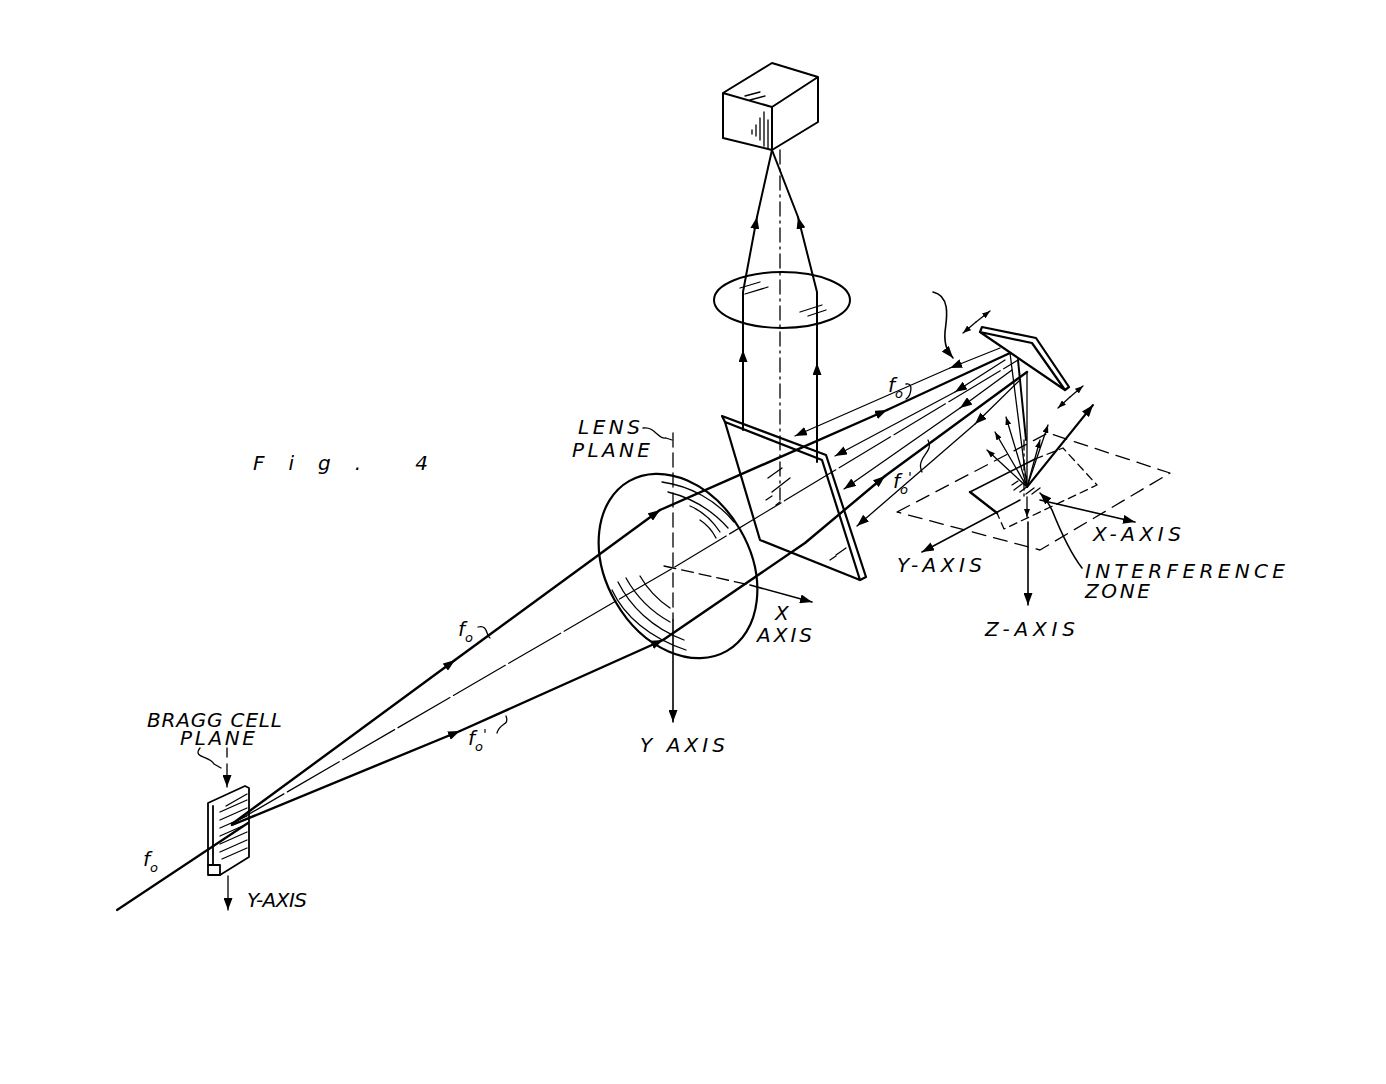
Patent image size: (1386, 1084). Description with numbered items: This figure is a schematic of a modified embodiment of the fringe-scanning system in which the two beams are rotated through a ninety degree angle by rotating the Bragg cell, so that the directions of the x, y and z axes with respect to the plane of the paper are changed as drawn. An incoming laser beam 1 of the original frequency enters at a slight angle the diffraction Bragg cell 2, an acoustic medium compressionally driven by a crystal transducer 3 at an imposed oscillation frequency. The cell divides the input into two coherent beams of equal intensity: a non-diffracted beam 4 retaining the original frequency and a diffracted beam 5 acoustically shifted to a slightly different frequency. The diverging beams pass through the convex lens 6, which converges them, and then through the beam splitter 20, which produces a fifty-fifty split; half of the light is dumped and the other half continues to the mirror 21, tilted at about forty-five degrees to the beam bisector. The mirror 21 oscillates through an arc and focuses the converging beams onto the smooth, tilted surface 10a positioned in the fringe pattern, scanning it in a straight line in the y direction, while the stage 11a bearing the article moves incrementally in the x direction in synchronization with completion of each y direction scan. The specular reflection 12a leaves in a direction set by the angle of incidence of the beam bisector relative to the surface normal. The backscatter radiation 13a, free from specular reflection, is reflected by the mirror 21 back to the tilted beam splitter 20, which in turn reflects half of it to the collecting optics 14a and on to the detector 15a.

The laser beam 1 is at (140, 900).
The diffraction Bragg cell 2 is at (208, 810).
The crystal transducer 3 is at (250, 857).
The non-diffracted beam 4 is at (395, 708).
The diffracted beam 5 is at (380, 766).
The convex lens 6 is at (702, 653).
The smooth tilted surface 10a is at (976, 490).
The stage 11a is at (1170, 473).
The specular reflection 12a is at (1163, 443).
The backscatter radiation 13a is at (941, 297).
The collecting optics 14a is at (714, 300).
The detector 15a is at (846, 120).
The beam splitter 20 is at (725, 422).
The mirror 21 is at (1037, 340).